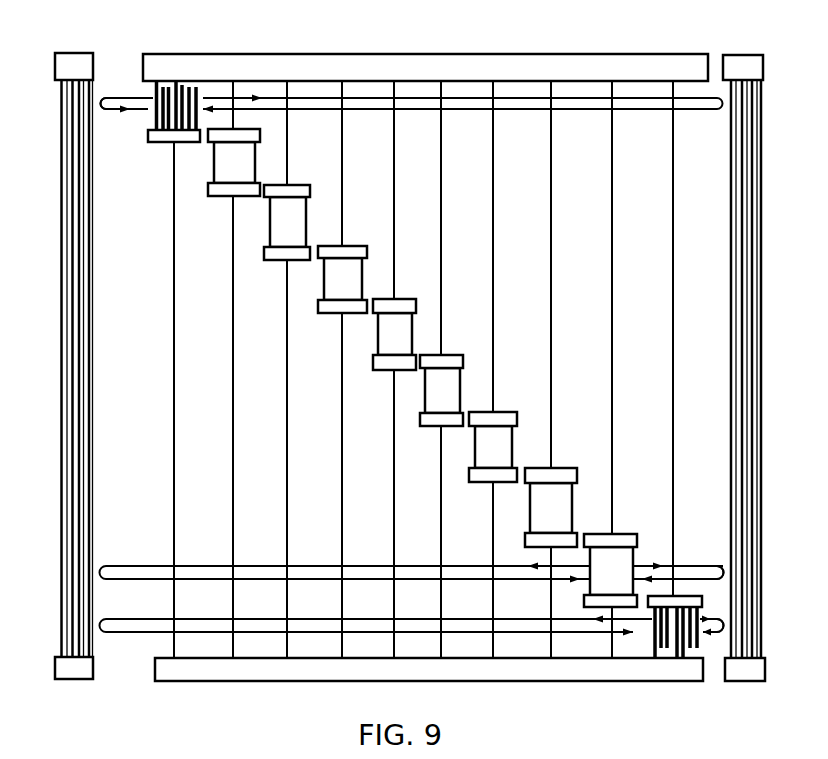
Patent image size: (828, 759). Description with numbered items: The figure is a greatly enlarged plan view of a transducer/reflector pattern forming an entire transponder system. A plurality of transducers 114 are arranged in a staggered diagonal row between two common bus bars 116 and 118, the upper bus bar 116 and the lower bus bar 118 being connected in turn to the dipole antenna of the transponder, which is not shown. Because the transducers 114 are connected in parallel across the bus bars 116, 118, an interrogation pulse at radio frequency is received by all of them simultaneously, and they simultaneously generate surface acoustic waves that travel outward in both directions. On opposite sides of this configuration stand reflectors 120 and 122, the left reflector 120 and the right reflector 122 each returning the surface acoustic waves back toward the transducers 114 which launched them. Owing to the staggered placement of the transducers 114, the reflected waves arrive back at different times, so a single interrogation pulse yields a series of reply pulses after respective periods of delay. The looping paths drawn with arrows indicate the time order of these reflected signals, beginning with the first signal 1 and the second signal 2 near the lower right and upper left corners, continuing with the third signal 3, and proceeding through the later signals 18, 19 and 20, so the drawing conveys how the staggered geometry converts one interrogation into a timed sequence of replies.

The first reflected signal 1 is at (713, 634).
The second reflected signal 2 is at (115, 97).
The third reflected signal 3 is at (689, 565).
The eighteenth reflected signal 18 is at (369, 564).
The nineteenth reflected signal 19 is at (463, 100).
The twentieth reflected signal 20 is at (370, 618).
The transducer 114 is at (166, 104).
The common bus bar 116 is at (693, 68).
The common bus bar 118 is at (692, 672).
The reflector 120 is at (58, 317).
The reflector 122 is at (766, 325).